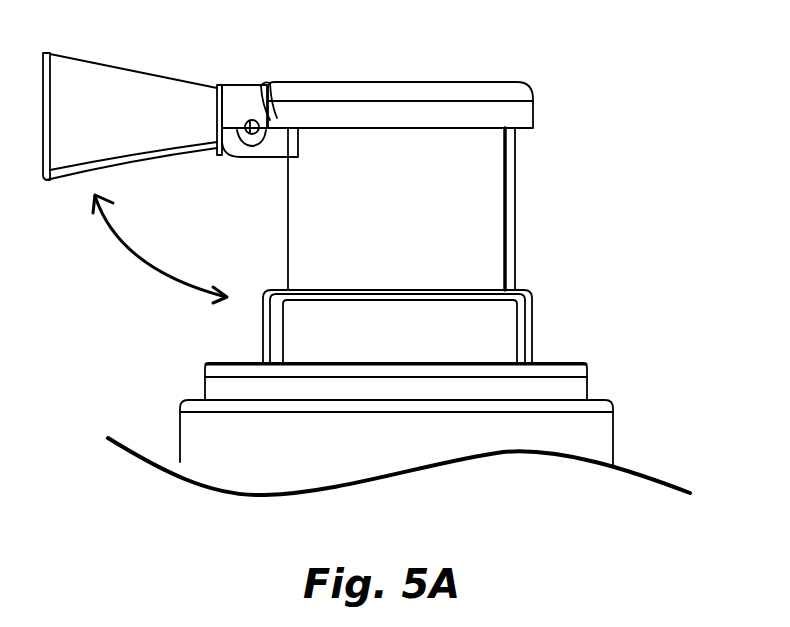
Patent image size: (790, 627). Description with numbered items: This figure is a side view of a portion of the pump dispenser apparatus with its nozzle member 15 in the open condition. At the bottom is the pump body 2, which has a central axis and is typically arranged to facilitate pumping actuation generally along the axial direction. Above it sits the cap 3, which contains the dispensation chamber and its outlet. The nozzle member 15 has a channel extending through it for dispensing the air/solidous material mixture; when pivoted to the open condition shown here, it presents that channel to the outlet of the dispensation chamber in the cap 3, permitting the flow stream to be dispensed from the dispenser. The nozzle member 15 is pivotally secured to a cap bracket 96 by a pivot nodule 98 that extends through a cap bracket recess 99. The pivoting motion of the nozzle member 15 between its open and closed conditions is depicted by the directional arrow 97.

The pump body 2 is at (520, 412).
The cap 3 is at (512, 167).
The nozzle member 15 is at (130, 90).
The cap bracket 96 is at (238, 98).
The directional arrow 97 is at (140, 260).
The pivot nodule 98 is at (242, 140).
The cap bracket recess 99 is at (265, 136).